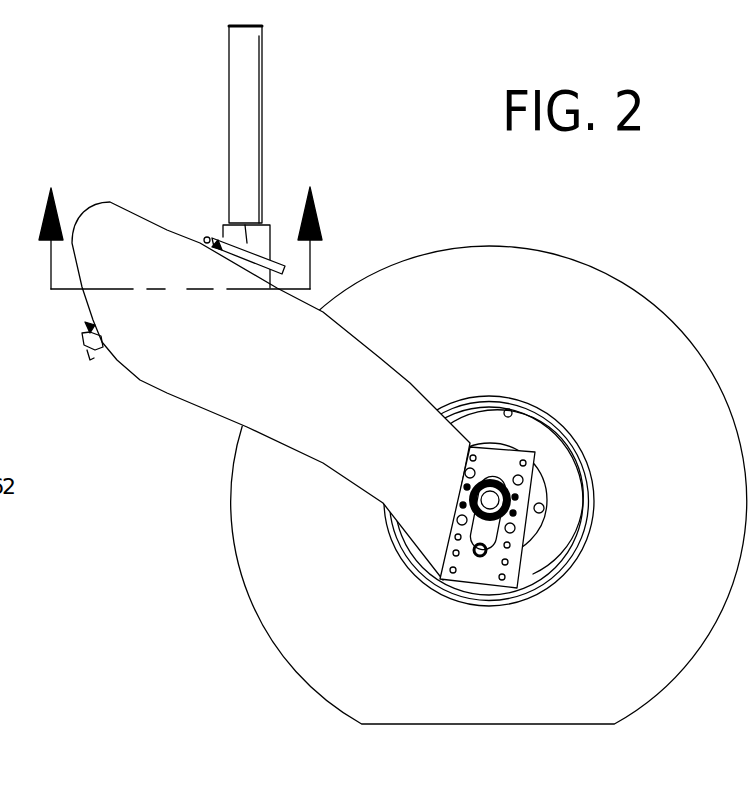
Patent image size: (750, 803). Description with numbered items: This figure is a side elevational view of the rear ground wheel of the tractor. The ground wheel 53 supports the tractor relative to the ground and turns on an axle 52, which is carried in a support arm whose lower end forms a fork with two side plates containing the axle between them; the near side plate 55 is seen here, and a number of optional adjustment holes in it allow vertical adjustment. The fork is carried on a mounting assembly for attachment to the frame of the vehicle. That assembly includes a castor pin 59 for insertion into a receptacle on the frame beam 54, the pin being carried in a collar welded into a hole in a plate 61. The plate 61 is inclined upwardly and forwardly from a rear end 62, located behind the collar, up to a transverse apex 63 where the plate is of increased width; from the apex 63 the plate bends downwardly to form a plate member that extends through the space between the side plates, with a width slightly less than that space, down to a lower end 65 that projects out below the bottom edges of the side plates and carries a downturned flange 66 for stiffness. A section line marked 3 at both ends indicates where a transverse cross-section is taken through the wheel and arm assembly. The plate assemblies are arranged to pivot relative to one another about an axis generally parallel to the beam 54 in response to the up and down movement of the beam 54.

The section line 3- 3 is at (181, 244).
The axle 52 is at (503, 480).
The ground wheel 53 is at (289, 604).
The beam 54 is at (545, 506).
The side plate 55 is at (332, 422).
The castor pin 59 is at (252, 100).
The plate 61 is at (264, 240).
The rear end 62 is at (288, 270).
The apex 63 is at (226, 225).
The lower end 65 is at (82, 338).
The downturned flange 66 is at (85, 353).